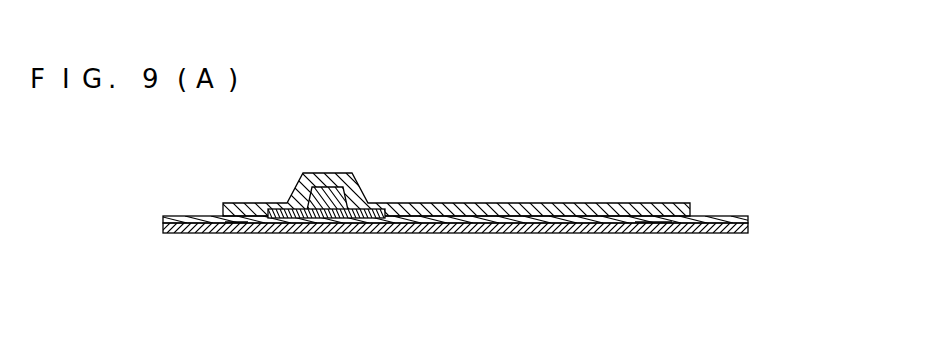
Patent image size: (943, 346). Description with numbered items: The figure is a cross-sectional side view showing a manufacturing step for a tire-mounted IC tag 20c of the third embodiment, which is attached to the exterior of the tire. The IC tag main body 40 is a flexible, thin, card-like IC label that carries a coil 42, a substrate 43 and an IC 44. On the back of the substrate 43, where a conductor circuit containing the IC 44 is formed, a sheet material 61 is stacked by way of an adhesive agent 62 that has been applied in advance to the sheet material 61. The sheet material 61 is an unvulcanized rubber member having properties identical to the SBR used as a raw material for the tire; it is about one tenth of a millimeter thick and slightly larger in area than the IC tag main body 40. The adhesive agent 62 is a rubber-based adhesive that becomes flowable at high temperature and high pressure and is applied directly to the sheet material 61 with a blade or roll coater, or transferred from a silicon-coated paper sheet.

The tire-mounted IC tag 20c is at (477, 224).
The IC tag main body 40 is at (704, 209).
The coil 42 is at (236, 224).
The substrate 43 is at (293, 227).
The IC 44 is at (330, 227).
The sheet material 61 is at (748, 232).
The adhesive agent 62 is at (748, 220).